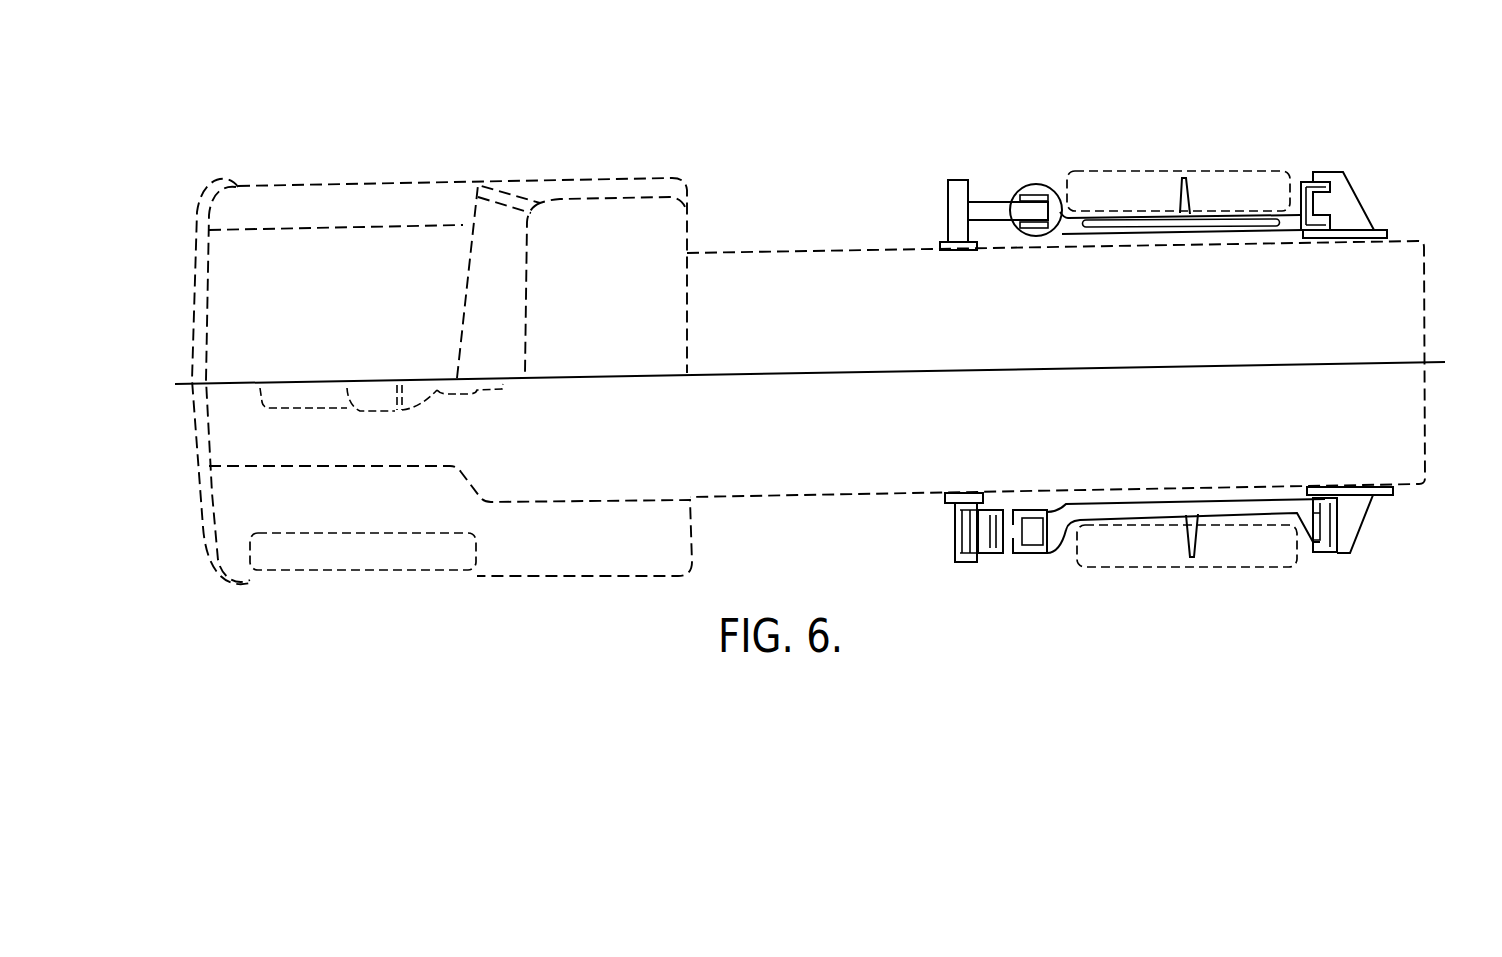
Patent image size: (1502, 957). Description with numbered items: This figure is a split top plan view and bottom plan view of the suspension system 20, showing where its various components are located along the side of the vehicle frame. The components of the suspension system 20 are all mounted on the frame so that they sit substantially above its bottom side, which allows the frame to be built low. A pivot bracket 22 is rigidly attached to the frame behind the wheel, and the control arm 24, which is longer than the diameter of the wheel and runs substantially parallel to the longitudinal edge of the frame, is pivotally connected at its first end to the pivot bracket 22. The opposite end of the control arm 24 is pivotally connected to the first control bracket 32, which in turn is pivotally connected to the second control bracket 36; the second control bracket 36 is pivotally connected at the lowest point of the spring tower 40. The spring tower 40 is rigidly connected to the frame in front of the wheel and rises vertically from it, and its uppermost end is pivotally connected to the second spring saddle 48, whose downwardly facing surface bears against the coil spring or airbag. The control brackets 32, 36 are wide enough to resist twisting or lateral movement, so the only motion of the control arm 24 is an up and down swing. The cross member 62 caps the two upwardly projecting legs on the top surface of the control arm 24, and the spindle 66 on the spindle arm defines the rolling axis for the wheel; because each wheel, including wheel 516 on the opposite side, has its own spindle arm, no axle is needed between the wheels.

The suspension system 20 is at (889, 81).
The pivot bracket 22 is at (1357, 195).
The control arm 24 is at (1303, 178).
The first control bracket 32 is at (1023, 557).
The second control bracket 36 is at (993, 557).
The spring tower 40 is at (947, 202).
The second spring saddle 48 is at (1043, 186).
The cross member 62 is at (1180, 232).
The spindle 66 is at (1177, 192).
The wheel 516 is at (1263, 168).